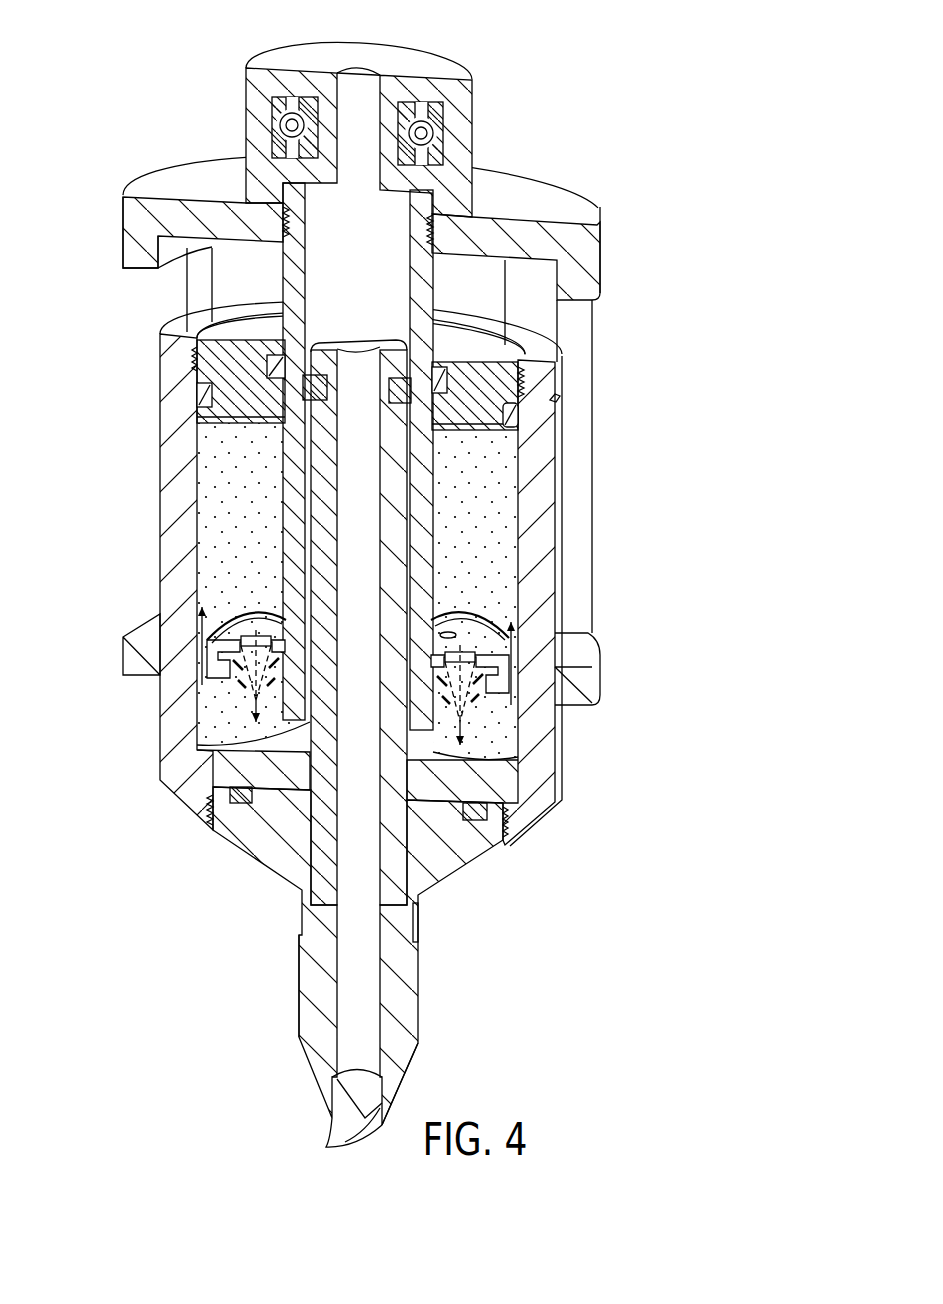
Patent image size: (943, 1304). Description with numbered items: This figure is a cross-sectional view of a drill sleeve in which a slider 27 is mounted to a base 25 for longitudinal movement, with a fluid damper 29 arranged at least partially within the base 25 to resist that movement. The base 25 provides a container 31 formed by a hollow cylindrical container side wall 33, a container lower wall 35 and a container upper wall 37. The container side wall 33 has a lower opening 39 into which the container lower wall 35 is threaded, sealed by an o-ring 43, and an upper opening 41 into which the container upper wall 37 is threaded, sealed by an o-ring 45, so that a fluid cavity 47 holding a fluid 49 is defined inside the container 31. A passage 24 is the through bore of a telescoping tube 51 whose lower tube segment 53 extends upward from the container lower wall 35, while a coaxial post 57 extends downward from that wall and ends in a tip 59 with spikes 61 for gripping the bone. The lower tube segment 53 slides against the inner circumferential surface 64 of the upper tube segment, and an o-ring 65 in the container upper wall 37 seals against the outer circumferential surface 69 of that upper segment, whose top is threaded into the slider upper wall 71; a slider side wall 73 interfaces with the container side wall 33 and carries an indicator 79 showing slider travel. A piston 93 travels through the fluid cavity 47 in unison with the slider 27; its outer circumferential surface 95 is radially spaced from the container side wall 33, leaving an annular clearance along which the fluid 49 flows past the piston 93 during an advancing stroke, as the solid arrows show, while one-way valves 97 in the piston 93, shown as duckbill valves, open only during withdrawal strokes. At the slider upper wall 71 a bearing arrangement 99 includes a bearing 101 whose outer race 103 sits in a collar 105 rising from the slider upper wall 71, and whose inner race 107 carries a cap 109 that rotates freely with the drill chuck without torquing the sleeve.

The passage 24 is at (368, 995).
The base 25 is at (535, 828).
The slider 27 is at (603, 246).
The fluid damper 29 is at (562, 535).
The container 31 is at (568, 742).
The container side wall 33 is at (180, 698).
The container lower wall 35 is at (263, 847).
The container upper wall 37 is at (253, 325).
The lower opening 39 is at (210, 812).
The upper opening 41 is at (560, 400).
The o-ring 43 is at (240, 790).
The o-ring 45 is at (518, 426).
The fluid cavity 47 is at (498, 498).
The fluid 49 is at (505, 556).
The tube 51 is at (280, 503).
The lower tube segment 53 is at (325, 518).
The post 57 is at (292, 463).
The tip 59 is at (398, 1058).
The spikes 61 is at (330, 1146).
The inner circumferential surface 64 is at (323, 243).
The o-ring 65 is at (436, 368).
The outer circumferential surface 69 is at (433, 292).
The slider upper wall 71 is at (550, 180).
The slider side wall 73 is at (133, 228).
The indicator 79 is at (592, 644).
The piston 93 is at (492, 703).
The outer circumferential surface 95 is at (198, 630).
The one-way valves 97 is at (255, 698).
The bearing arrangement 99 is at (494, 75).
The bearing 101 is at (424, 100).
The outer race 103 is at (440, 148).
The collar 105 is at (258, 118).
The inner race 107 is at (310, 97).
The cap 109 is at (345, 57).